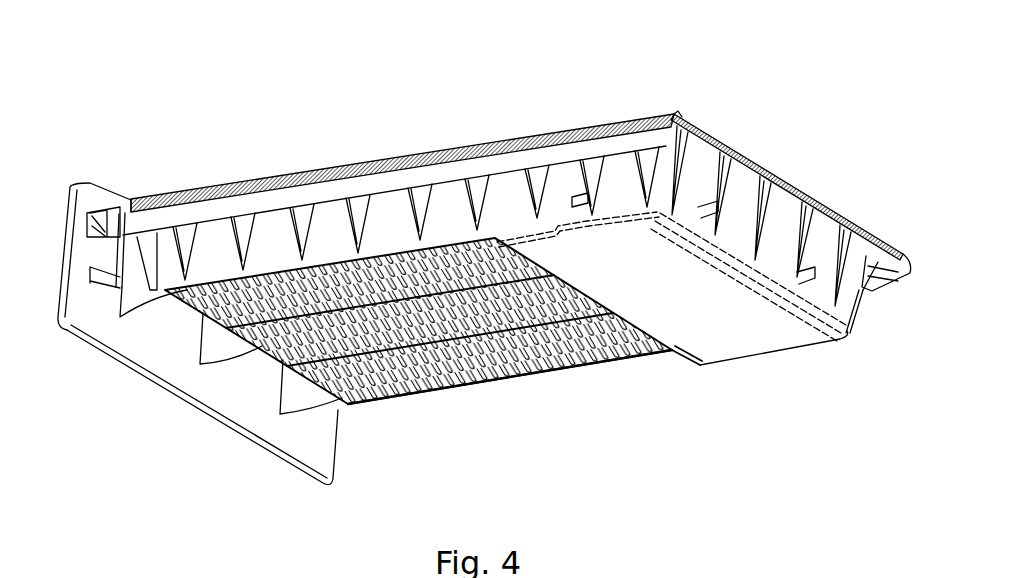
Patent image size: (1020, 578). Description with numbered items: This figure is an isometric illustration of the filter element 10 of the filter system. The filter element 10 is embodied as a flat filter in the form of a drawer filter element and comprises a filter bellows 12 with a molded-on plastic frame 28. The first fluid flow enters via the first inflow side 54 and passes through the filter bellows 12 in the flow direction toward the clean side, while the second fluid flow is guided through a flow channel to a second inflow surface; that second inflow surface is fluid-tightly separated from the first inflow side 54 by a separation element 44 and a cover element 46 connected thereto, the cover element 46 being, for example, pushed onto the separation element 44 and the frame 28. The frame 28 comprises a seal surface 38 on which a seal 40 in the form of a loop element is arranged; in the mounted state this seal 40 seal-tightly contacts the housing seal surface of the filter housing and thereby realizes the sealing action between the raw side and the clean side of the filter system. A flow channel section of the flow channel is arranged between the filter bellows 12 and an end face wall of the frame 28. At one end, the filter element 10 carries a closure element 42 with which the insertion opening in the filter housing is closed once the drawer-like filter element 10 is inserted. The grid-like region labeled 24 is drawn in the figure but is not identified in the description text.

The filter element 10 is at (542, 118).
The filter bellows 12 is at (280, 347).
The vented grid panel 24 is at (478, 388).
The frame 28 is at (705, 187).
The seal surface 38 is at (348, 167).
The seal 40 is at (193, 196).
The closure element 42 is at (92, 182).
The separation element 44 is at (658, 353).
The cover element 46 is at (756, 337).
The first inflow side 54 is at (391, 410).